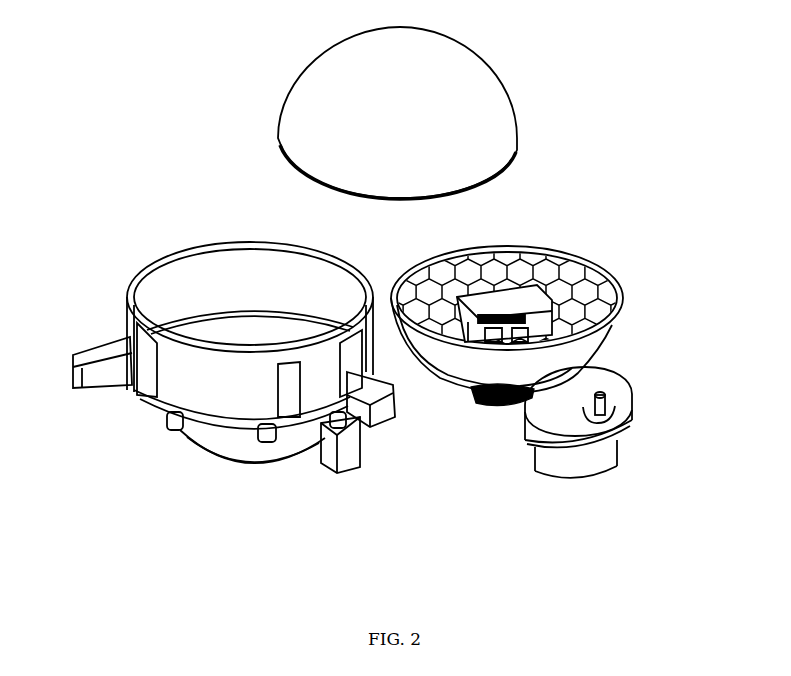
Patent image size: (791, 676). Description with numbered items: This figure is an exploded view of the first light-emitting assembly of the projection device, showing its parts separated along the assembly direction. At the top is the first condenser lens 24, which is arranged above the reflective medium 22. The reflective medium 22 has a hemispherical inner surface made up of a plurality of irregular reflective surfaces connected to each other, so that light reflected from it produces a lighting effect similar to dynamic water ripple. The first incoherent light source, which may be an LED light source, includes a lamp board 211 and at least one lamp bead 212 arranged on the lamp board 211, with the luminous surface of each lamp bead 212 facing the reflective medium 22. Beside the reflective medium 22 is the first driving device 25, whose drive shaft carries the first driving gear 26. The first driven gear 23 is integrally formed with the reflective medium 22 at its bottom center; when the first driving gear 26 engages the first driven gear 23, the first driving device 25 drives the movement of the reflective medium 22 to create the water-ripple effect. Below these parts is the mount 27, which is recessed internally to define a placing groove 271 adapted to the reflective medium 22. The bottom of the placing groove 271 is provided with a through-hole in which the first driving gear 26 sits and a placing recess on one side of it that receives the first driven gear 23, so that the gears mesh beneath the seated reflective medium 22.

The first condenser lens 24 is at (477, 124).
The reflective medium 22 is at (535, 291).
The lamp board 211 is at (498, 307).
The lamp bead 212 is at (572, 292).
The first driven gear 23 is at (515, 404).
The first driving device 25 is at (627, 387).
The first driving gear 26 is at (598, 358).
The mount 27 is at (323, 432).
The placing groove 271 is at (220, 295).